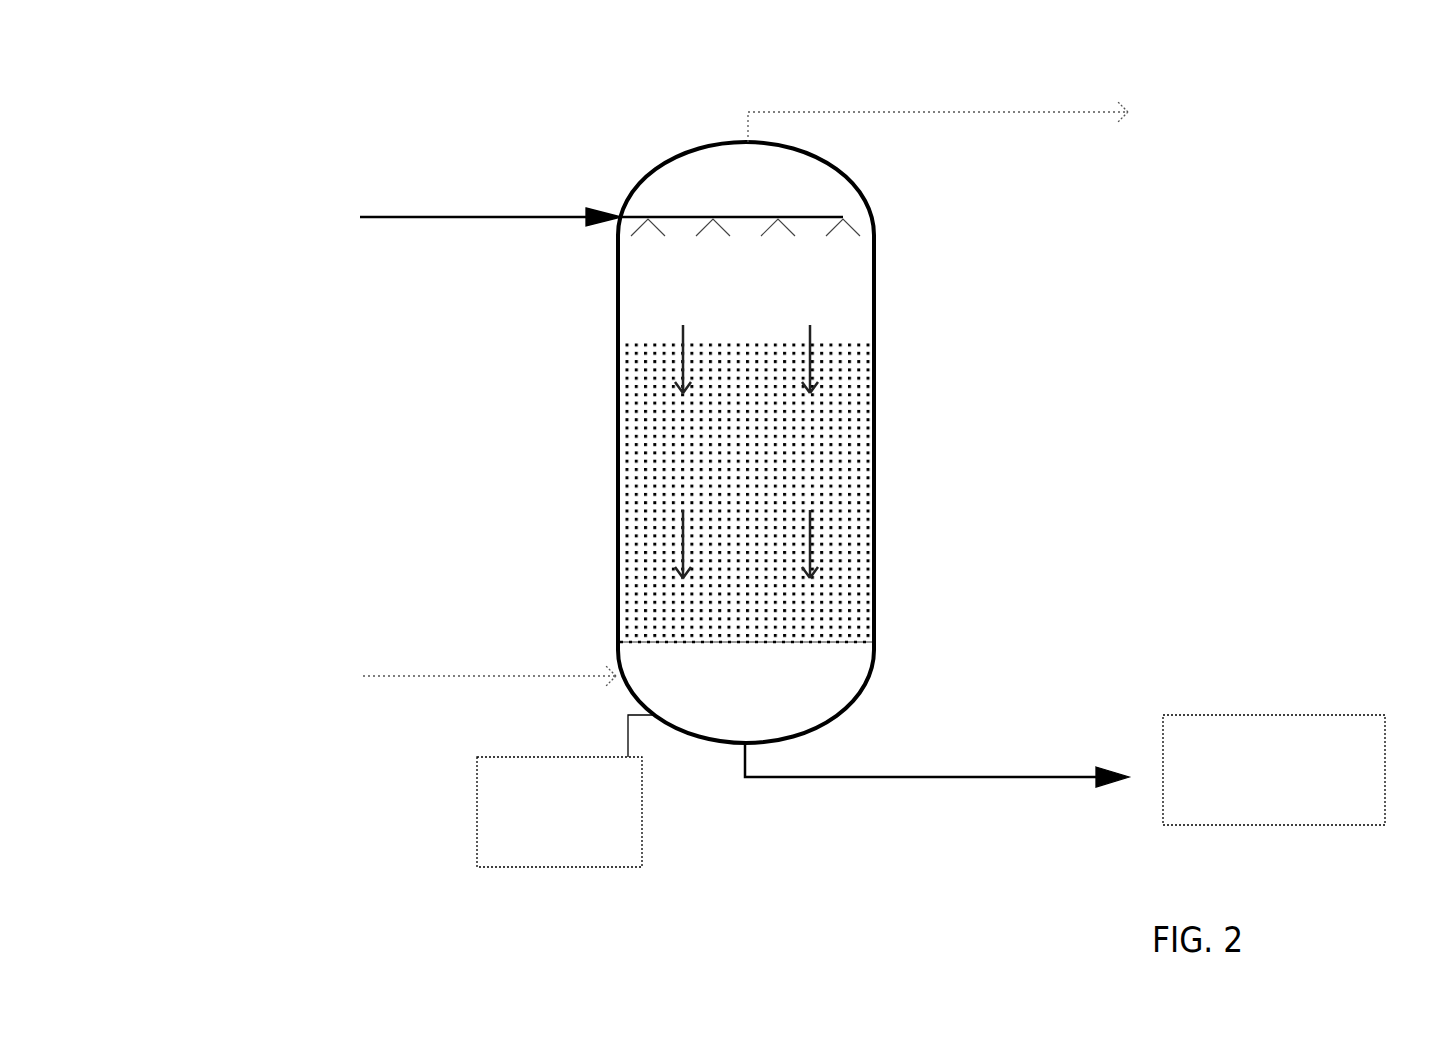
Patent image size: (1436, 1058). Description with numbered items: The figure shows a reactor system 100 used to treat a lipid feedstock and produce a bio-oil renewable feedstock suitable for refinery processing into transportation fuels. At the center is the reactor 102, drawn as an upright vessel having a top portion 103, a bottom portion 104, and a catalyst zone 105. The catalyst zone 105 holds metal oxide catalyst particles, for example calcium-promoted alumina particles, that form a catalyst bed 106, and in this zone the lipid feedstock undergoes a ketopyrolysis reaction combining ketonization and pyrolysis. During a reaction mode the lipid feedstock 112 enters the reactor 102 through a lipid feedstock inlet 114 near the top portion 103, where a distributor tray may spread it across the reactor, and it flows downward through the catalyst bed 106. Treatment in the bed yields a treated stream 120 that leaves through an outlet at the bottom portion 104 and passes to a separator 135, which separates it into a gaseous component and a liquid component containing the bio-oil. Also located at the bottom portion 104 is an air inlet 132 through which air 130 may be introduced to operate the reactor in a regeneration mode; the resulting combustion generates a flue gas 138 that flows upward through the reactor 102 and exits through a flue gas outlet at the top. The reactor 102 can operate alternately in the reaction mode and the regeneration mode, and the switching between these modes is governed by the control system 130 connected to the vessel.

The reactor system 100 is at (299, 150).
The reactor 102 is at (618, 425).
The top portion 103 is at (971, 210).
The bottom portion 104 is at (943, 665).
The catalyst zone 105 is at (951, 385).
The catalyst bed 106 is at (858, 460).
The lipid feedstock 112 is at (490, 175).
The lipid feedstock inlet 114 is at (622, 222).
The treated stream 120 is at (946, 804).
The control system 130 is at (503, 777).
The air inlet 132 is at (617, 673).
The separator 135 is at (1274, 770).
The flue gas 138 is at (938, 105).